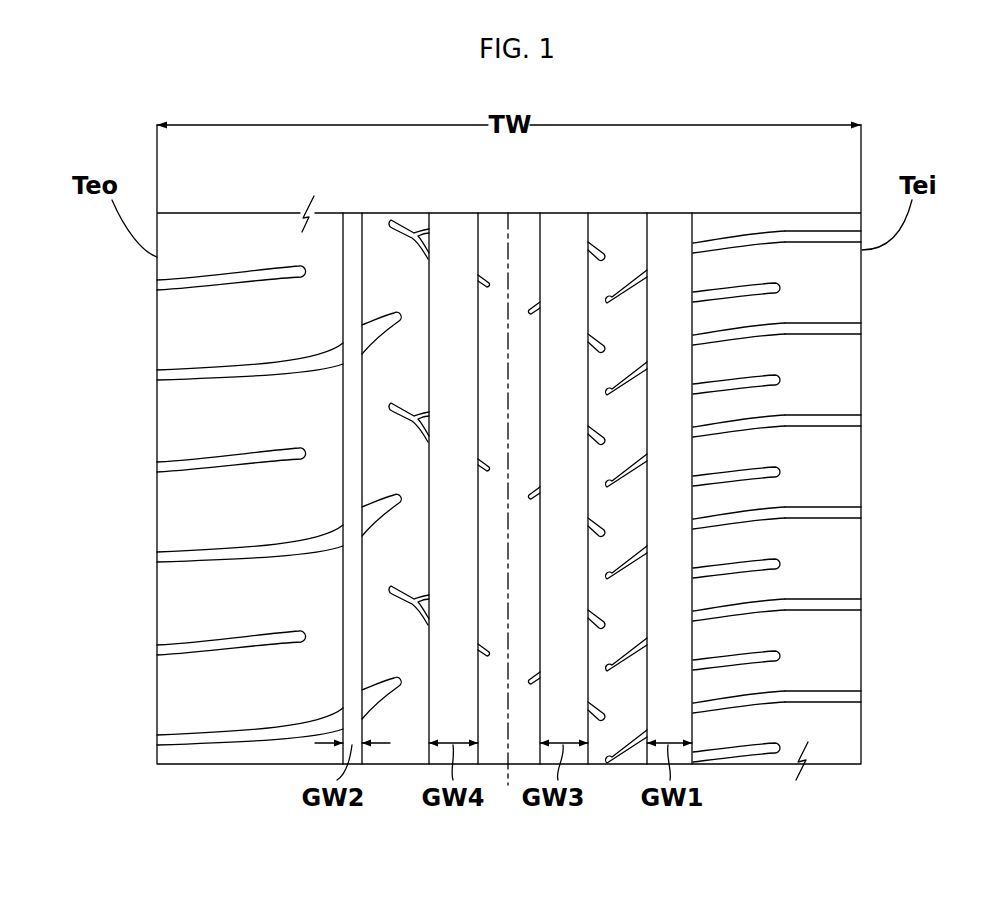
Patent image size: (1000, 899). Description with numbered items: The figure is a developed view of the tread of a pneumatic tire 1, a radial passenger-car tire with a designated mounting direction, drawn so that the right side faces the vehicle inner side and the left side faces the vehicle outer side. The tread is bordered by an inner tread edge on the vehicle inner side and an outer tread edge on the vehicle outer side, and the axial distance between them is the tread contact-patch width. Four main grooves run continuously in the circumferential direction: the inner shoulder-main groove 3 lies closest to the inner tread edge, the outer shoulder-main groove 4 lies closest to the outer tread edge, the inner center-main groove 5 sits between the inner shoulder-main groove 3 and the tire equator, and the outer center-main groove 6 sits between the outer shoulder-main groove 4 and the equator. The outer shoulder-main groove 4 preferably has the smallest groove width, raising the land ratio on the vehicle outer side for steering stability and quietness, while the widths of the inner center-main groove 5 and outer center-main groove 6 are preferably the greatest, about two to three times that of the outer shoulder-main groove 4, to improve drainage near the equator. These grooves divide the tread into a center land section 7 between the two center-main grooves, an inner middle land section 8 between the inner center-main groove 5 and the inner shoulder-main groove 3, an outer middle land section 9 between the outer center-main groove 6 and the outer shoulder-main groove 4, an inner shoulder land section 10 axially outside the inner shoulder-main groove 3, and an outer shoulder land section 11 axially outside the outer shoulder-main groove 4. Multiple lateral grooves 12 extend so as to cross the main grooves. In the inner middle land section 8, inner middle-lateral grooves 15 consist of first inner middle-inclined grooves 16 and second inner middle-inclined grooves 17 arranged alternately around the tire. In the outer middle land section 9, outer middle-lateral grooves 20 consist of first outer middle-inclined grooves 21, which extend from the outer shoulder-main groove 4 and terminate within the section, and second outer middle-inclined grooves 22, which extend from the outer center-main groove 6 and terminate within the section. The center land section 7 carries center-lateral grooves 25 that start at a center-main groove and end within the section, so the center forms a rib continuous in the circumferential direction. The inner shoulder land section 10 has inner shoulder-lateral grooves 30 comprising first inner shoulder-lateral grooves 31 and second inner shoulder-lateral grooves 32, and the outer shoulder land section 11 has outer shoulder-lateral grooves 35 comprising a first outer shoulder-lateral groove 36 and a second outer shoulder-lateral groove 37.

The pneumatic tire 1 is at (702, 202).
The inner shoulder-main groove 3 is at (667, 247).
The outer shoulder-main groove 4 is at (355, 247).
The inner center-main groove 5 is at (562, 247).
The outer center-main groove 6 is at (443, 247).
The center land section 7 is at (500, 501).
The inner middle land section 8 is at (754, 501).
The outer middle land section 9 is at (332, 501).
The inner shoulder land section 10 is at (840, 463).
The outer shoulder land section 11 is at (512, 454).
The lateral groove 12 is at (512, 505).
The inner middle-lateral groove 15 is at (769, 554).
The first inner middle-inclined groove 16 is at (624, 752).
The second inner middle-inclined groove 17 is at (598, 716).
The outer middle-lateral groove 20 is at (378, 319).
The first outer middle-inclined groove 21 is at (381, 687).
The second outer middle-inclined groove 22 is at (410, 605).
The center-lateral groove 25 is at (480, 653).
The inner shoulder-lateral groove 30 is at (840, 472).
The first inner shoulder-lateral groove 31 is at (783, 420).
The second inner shoulder-lateral groove 32 is at (762, 462).
The outer shoulder-lateral groove 35 is at (190, 505).
The first outer shoulder-lateral groove 36 is at (235, 555).
The second outer shoulder-lateral groove 37 is at (232, 462).